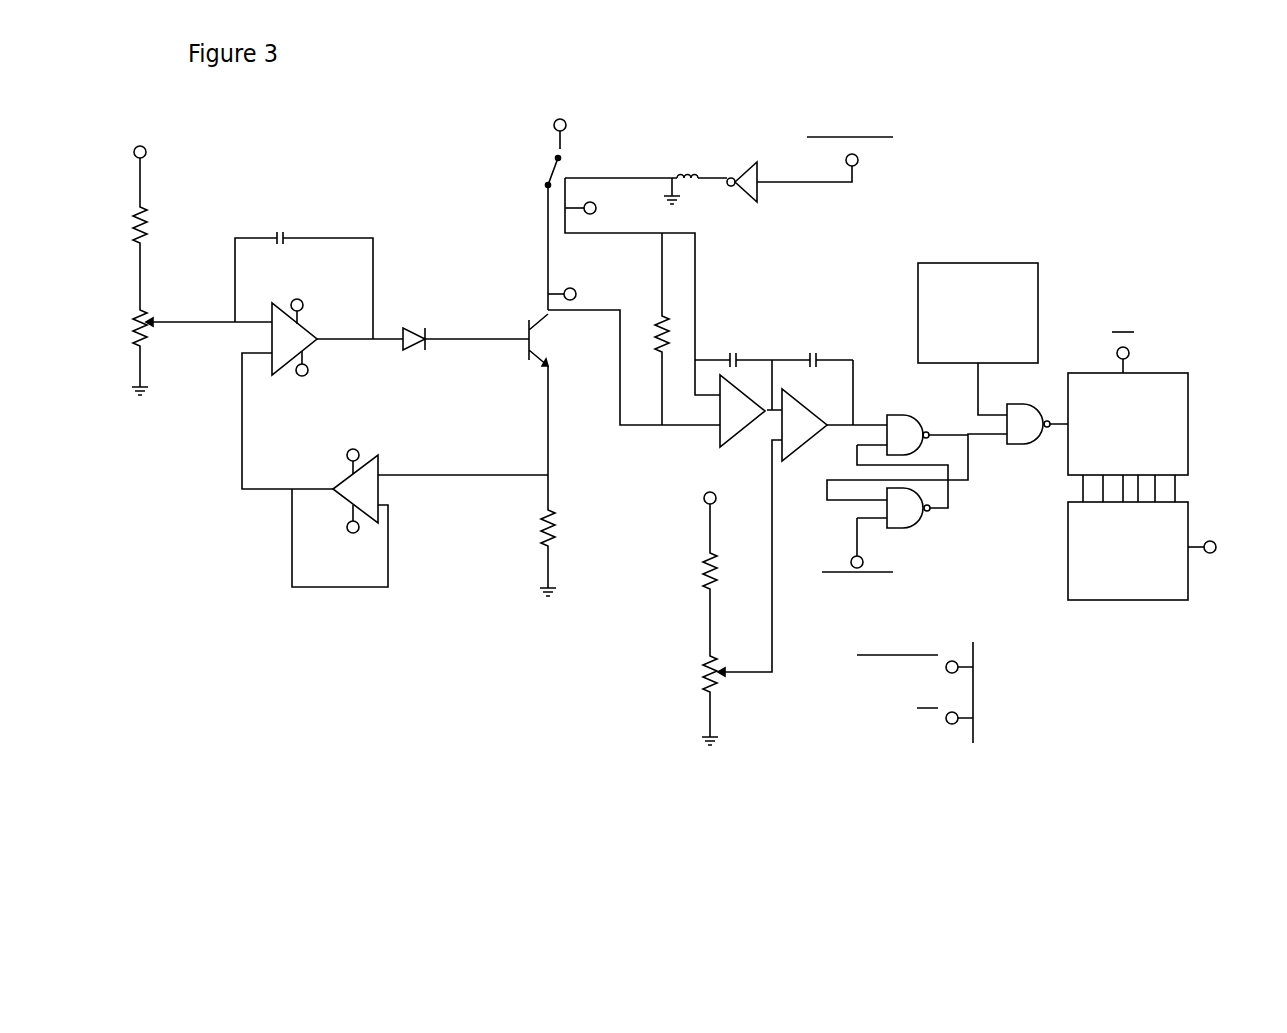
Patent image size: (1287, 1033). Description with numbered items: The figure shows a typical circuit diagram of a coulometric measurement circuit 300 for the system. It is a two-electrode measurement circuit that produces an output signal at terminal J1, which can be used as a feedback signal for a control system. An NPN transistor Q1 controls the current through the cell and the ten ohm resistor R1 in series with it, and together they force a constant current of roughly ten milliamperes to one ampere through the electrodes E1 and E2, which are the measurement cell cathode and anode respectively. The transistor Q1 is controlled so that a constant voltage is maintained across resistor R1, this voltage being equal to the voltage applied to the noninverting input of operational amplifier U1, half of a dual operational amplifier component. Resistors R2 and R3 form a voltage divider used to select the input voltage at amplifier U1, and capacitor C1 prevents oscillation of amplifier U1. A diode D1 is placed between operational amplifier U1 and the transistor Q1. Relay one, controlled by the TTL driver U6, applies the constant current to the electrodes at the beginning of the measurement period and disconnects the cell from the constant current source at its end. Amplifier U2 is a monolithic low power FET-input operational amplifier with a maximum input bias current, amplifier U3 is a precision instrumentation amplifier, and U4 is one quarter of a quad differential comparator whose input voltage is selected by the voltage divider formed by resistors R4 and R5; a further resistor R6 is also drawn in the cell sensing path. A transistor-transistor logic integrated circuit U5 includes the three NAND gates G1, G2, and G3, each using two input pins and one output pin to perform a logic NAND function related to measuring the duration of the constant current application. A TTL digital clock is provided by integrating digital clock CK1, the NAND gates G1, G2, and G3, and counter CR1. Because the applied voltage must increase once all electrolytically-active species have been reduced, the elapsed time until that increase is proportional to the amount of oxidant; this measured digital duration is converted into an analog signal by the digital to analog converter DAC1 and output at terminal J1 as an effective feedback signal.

The measurement circuit 300 is at (887, 225).
The operational amplifier U1 is at (314, 337).
The operational amplifier U2 is at (348, 491).
The operational amplifier U3 is at (737, 423).
The differential comparator U4 is at (805, 441).
The TTL integrated circuit U5 is at (909, 457).
The TTL driver U6 is at (745, 165).
The resistor R1 is at (573, 525).
The resistor R2 is at (123, 224).
The resistor R3 is at (126, 327).
The resistor R4 is at (692, 570).
The resistor R5 is at (692, 673).
The resistor R6 is at (654, 333).
The capacitor C1 is at (280, 225).
The diode D1 is at (414, 328).
The transistor Q1 is at (527, 332).
The electrode E1 is at (585, 288).
The electrode E2 is at (600, 217).
The NAND gate G1 is at (908, 435).
The NAND gate G2 is at (908, 508).
The NAND gate G3 is at (1026, 424).
The digital clock CK1 is at (978, 313).
The counter CR1 is at (1128, 424).
The digital to analog converter DAC1 is at (1128, 551).
The terminal J1 is at (1228, 540).